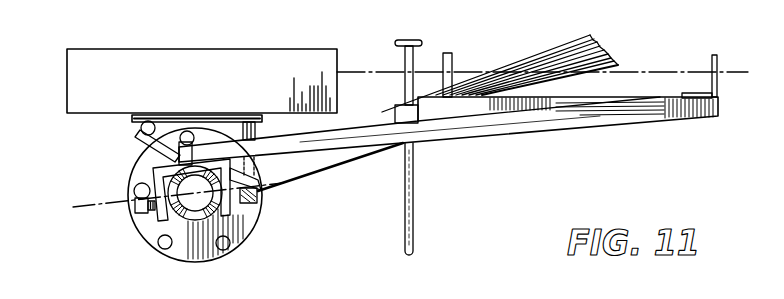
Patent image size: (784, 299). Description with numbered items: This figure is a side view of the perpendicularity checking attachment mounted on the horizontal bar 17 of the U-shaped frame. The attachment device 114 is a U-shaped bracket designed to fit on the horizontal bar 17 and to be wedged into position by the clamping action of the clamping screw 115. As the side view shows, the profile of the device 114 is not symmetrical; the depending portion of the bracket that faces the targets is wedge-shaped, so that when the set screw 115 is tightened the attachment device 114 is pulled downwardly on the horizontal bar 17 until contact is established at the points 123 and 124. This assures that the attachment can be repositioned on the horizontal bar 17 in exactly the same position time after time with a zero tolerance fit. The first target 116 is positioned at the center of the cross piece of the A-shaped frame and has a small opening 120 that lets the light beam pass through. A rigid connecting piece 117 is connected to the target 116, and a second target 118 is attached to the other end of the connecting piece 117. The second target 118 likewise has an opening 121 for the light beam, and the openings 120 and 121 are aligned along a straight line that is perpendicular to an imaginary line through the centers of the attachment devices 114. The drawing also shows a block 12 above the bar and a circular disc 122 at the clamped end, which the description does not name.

The frame block 12 is at (197, 62).
The horizontal bar 17 is at (182, 213).
The attachment device 114 is at (153, 167).
The clamping screw 115 is at (133, 201).
The first target 116 is at (443, 64).
The rigid connecting piece 117 is at (468, 108).
The second target 118 is at (711, 63).
The opening 120 is at (453, 75).
The opening 121 is at (718, 76).
The disc 122 is at (250, 234).
The contact point 123 is at (192, 165).
The contact point 124 is at (256, 211).